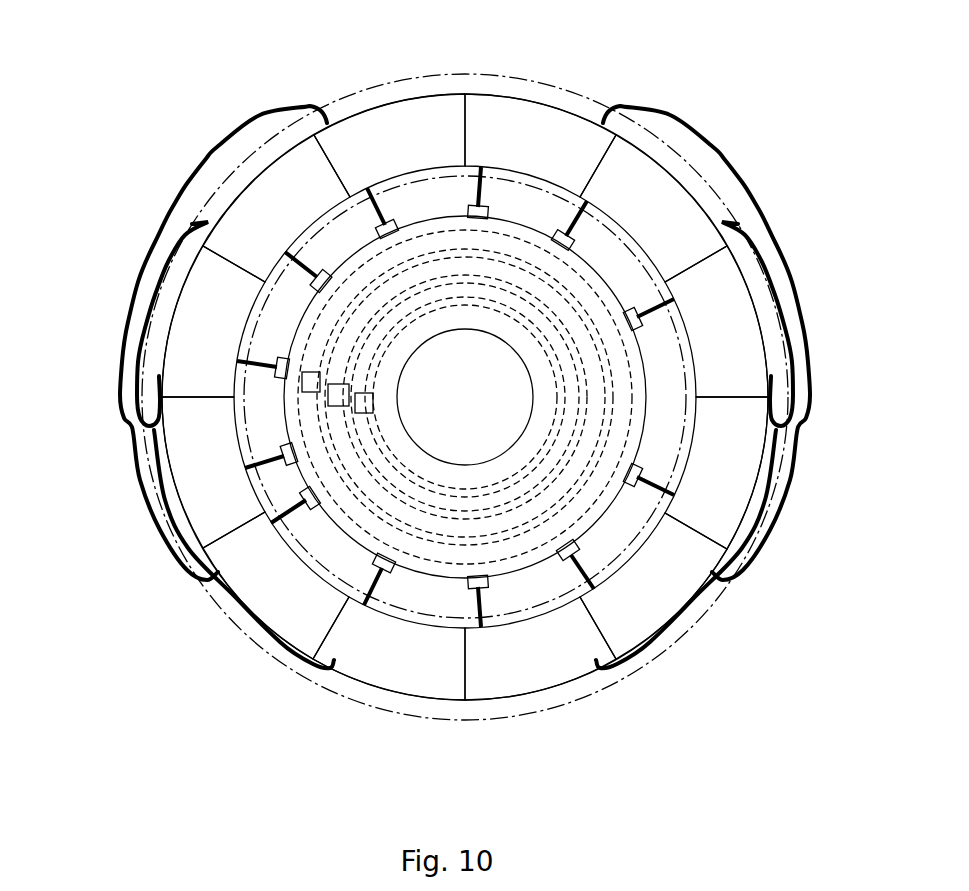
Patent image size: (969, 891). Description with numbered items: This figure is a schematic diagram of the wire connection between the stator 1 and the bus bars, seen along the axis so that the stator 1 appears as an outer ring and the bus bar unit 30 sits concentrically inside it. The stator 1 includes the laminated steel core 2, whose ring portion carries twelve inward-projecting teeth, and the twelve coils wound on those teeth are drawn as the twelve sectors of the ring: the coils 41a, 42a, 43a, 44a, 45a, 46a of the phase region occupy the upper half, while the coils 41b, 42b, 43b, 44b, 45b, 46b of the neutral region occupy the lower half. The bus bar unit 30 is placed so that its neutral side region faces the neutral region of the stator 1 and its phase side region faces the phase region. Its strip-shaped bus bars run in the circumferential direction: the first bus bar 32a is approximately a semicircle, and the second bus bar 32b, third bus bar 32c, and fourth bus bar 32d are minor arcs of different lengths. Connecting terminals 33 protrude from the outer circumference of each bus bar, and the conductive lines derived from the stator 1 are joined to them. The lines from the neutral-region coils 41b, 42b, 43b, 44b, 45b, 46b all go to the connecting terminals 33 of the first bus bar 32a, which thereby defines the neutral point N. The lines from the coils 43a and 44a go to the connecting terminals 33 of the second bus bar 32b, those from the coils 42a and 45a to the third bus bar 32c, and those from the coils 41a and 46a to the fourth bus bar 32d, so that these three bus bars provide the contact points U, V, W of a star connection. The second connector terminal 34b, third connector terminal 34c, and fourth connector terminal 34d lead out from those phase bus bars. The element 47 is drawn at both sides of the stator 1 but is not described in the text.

The stator 1 is at (504, 74).
The core 2 is at (547, 101).
The bus bar unit 30 is at (427, 467).
The first bus bar 32a is at (473, 542).
The second bus bar 32b is at (471, 300).
The third bus bar 32c is at (523, 292).
The fourth bus bar 32d is at (606, 350).
The connecting terminal 33 is at (490, 210).
The second connector terminal 34b is at (373, 414).
The third connector terminal 34c is at (340, 408).
The fourth connector terminal 34d is at (312, 397).
The coil 41a is at (389, 145).
The coil 41b is at (213, 472).
The coil 42a is at (276, 208).
The coil 42b is at (276, 585).
The coil 43a is at (213, 321).
The coil 43b is at (389, 648).
The coil 44a is at (540, 145).
The coil 44b is at (716, 473).
The coil 45a is at (653, 208).
The coil 45b is at (653, 586).
The coil 46a is at (716, 321).
The coil 46b is at (540, 648).
The handle 47 is at (800, 415).